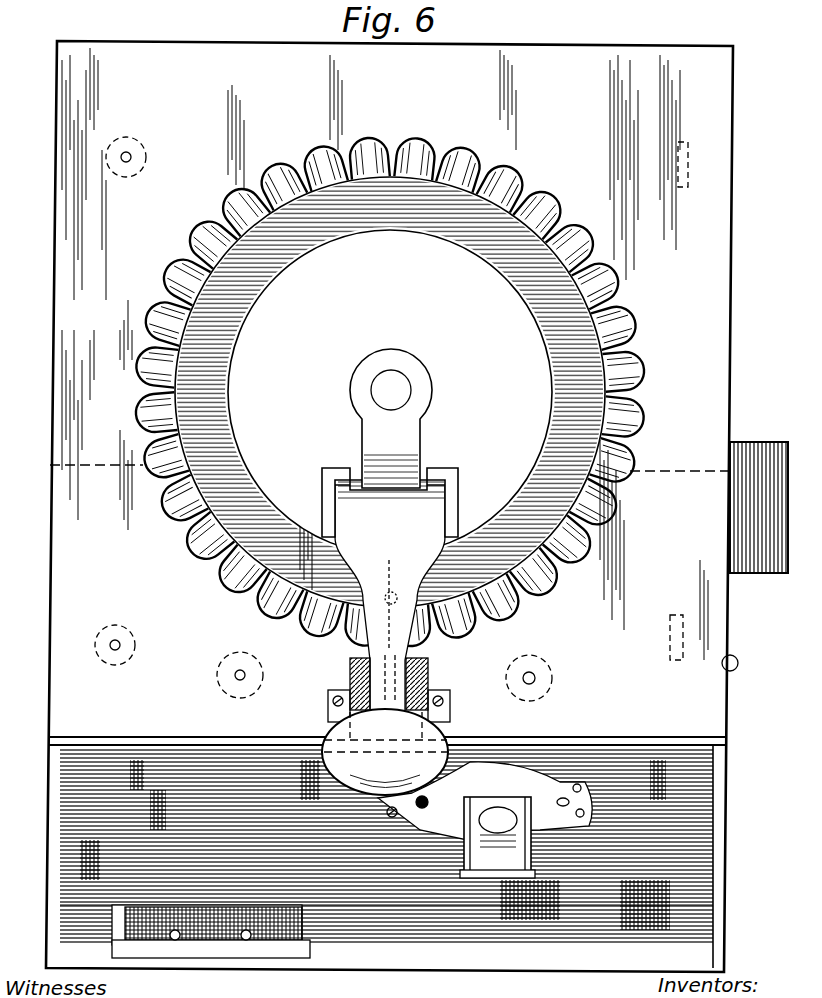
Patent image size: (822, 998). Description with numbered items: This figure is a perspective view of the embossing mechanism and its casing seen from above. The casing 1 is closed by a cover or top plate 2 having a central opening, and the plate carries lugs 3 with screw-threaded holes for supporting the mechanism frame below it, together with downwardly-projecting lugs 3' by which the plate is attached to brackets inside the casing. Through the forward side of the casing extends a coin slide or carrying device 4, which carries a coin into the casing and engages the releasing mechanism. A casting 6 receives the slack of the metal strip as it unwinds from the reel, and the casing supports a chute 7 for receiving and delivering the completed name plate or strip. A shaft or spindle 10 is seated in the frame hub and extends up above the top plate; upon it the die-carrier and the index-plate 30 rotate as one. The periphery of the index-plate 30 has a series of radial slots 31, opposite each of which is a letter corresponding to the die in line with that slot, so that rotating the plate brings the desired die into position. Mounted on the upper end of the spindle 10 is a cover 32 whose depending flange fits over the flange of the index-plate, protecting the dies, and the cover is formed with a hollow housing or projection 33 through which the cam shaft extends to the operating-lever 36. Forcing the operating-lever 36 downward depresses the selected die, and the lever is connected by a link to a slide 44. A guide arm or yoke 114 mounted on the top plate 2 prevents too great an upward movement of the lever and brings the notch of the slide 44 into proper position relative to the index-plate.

The casing 1 is at (394, 852).
The cover or top plate 2 is at (392, 506).
The lugs 3 is at (391, 676).
The downwardly-projecting lugs 3' is at (129, 404).
The coin slide or carrying device 4 is at (466, 840).
The casting 6 is at (768, 442).
The chute 7 is at (205, 930).
The shaft or spindle 10 is at (391, 418).
The index-plate 30 is at (389, 391).
The radial slots 31 is at (218, 228).
The cover 32 is at (390, 392).
The hollow housing or projection 33 is at (405, 478).
The operating-lever 36 is at (395, 766).
The slide 44 is at (385, 680).
The guide arm or yoke 114 is at (350, 676).